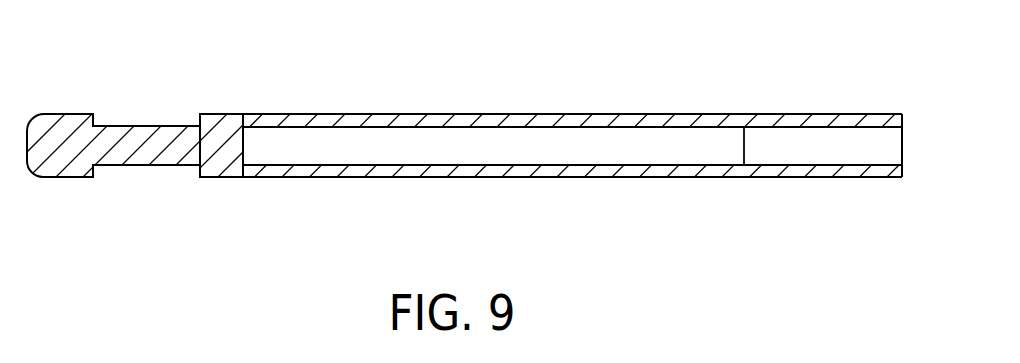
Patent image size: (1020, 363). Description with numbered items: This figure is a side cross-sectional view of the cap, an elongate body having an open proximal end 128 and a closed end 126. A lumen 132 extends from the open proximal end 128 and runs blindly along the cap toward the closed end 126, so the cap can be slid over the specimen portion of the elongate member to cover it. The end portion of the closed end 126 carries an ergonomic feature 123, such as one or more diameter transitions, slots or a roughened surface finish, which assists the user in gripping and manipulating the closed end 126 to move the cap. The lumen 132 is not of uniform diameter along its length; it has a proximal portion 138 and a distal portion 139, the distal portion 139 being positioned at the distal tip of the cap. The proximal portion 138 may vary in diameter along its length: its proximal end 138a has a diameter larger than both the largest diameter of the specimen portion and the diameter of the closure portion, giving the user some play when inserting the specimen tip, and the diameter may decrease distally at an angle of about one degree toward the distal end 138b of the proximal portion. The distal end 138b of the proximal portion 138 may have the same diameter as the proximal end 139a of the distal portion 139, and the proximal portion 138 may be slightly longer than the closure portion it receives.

The ergonomic feature 123 is at (92, 115).
The closed end 126 is at (232, 115).
The open proximal end 128 is at (902, 114).
The lumen 132 is at (758, 142).
The proximal portion 138 is at (825, 157).
The proximal end of proximal portion 138a is at (902, 163).
The distal end of proximal portion 138b is at (745, 157).
The distal portion 139 is at (433, 180).
The proximal end of distal portion 139a is at (745, 130).